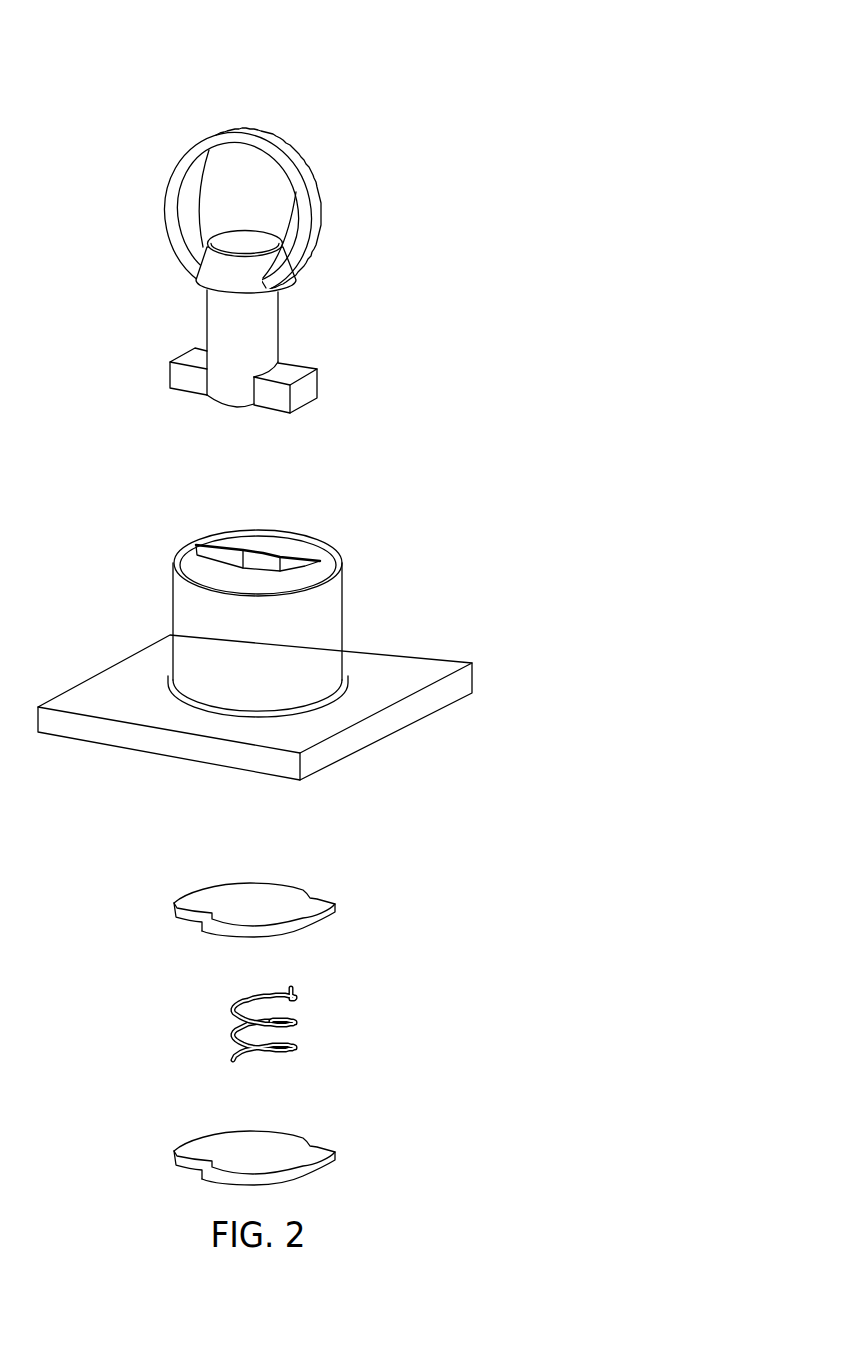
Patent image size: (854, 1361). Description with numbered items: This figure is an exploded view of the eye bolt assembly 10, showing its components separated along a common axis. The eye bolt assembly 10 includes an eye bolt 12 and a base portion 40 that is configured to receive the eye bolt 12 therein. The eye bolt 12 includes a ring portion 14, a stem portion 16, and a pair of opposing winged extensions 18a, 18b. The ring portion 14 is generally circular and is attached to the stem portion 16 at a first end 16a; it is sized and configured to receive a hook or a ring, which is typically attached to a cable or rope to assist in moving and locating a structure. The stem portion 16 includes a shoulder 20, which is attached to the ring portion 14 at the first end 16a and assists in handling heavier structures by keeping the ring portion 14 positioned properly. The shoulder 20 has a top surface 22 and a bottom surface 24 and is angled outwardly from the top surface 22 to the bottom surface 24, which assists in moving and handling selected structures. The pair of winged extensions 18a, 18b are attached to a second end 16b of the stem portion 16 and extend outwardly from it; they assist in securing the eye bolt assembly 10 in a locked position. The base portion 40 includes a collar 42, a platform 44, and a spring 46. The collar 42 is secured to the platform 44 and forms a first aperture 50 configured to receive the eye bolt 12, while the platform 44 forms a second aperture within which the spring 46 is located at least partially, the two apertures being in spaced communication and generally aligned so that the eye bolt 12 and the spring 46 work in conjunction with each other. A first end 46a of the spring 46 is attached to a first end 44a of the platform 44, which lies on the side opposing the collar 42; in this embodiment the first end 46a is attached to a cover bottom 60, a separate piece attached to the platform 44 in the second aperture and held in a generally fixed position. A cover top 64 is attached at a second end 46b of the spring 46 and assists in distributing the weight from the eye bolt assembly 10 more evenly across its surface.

The eye bolt assembly 10 is at (442, 116).
The eye bolt 12 is at (139, 106).
The ring portion 14 is at (157, 171).
The stem portion 16 is at (174, 283).
The first end 16a is at (154, 212).
The second end 16b is at (199, 418).
The winged extension 18a is at (336, 408).
The winged extension 18b is at (176, 348).
The shoulder 20 is at (154, 239).
The top surface 22 is at (256, 251).
The bottom surface 24 is at (196, 289).
The base portion 40 is at (471, 572).
The collar 42 is at (346, 591).
The platform 44 is at (419, 748).
The first end 44a is at (304, 789).
The spring 46 is at (321, 1035).
The first end 46a is at (305, 1073).
The second end 46b is at (303, 998).
The first aperture 50 is at (201, 551).
The cover bottom 60 is at (348, 1153).
The cover top 64 is at (358, 932).